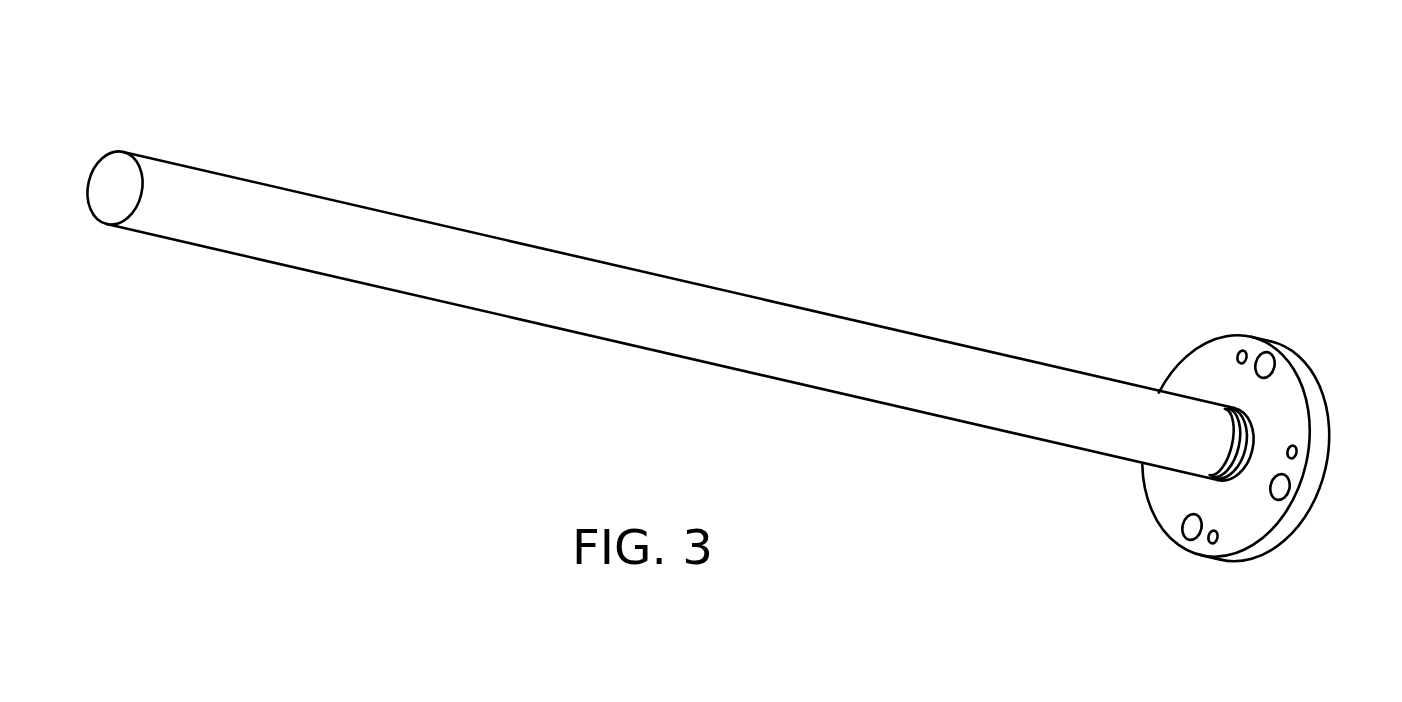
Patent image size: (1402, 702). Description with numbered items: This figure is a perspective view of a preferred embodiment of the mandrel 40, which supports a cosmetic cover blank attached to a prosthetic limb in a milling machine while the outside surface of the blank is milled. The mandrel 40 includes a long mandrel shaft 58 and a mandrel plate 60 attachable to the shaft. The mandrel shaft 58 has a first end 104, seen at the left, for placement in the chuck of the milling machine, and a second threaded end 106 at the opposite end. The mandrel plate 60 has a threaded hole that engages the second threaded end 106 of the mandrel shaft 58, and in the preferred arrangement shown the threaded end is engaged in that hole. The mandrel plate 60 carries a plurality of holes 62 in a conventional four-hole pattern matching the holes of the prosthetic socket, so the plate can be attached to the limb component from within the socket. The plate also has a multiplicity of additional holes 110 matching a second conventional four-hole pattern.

The mandrel 40 is at (852, 248).
The mandrel shaft 58 is at (248, 238).
The mandrel plate 60 is at (1312, 397).
The holes 62 is at (1287, 490).
The first end 104 is at (121, 151).
The second threaded end 106 is at (1236, 408).
The additional holes 110 is at (1297, 452).